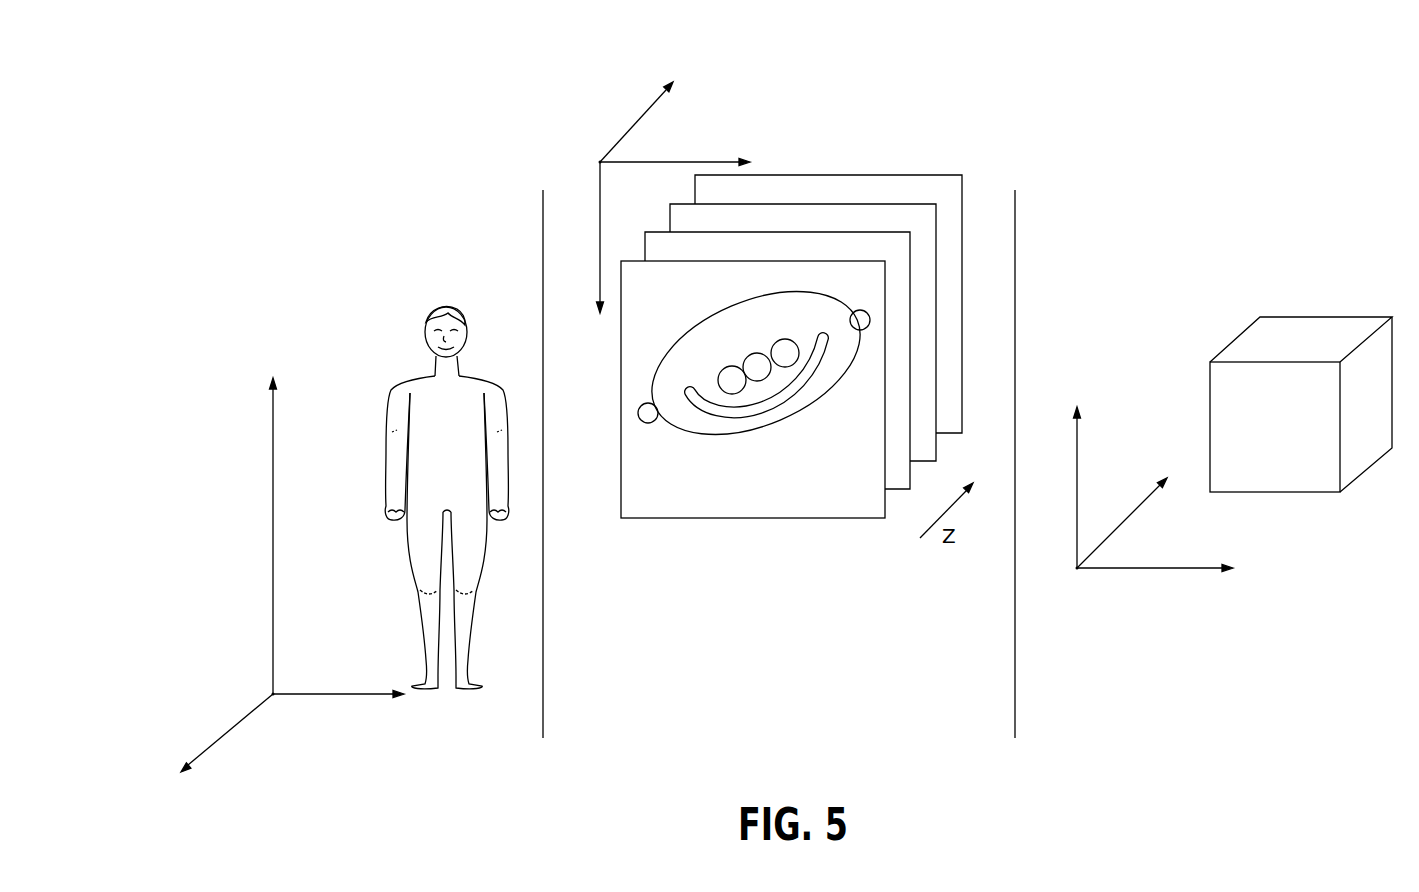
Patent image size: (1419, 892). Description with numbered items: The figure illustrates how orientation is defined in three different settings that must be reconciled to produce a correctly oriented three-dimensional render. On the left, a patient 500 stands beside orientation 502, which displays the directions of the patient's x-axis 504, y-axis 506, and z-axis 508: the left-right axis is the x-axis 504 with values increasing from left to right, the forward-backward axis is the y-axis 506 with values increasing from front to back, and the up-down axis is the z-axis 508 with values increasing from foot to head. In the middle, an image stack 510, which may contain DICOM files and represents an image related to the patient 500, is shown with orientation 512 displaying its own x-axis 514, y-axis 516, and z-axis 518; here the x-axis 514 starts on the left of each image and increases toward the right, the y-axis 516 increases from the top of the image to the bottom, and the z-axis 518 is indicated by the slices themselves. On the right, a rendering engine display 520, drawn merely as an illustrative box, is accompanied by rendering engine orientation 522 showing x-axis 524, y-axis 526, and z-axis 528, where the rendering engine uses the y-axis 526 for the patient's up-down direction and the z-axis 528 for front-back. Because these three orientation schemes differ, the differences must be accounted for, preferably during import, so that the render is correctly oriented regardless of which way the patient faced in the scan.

The patient 500 is at (404, 377).
The orientation 502 is at (269, 688).
The x-axis 504 is at (322, 658).
The y-axis 506 is at (212, 696).
The z-axis 508 is at (251, 562).
The image stack 510 is at (860, 507).
The orientation 512 is at (600, 162).
The x-axis 514 is at (717, 133).
The y-axis 516 is at (580, 287).
The z-axis 518 is at (610, 110).
The rendering engine display 520 is at (1297, 438).
The rendering engine orientation 522 is at (1077, 570).
The x-axis 524 is at (1223, 597).
The y-axis 526 is at (1062, 418).
The z-axis 528 is at (1167, 447).